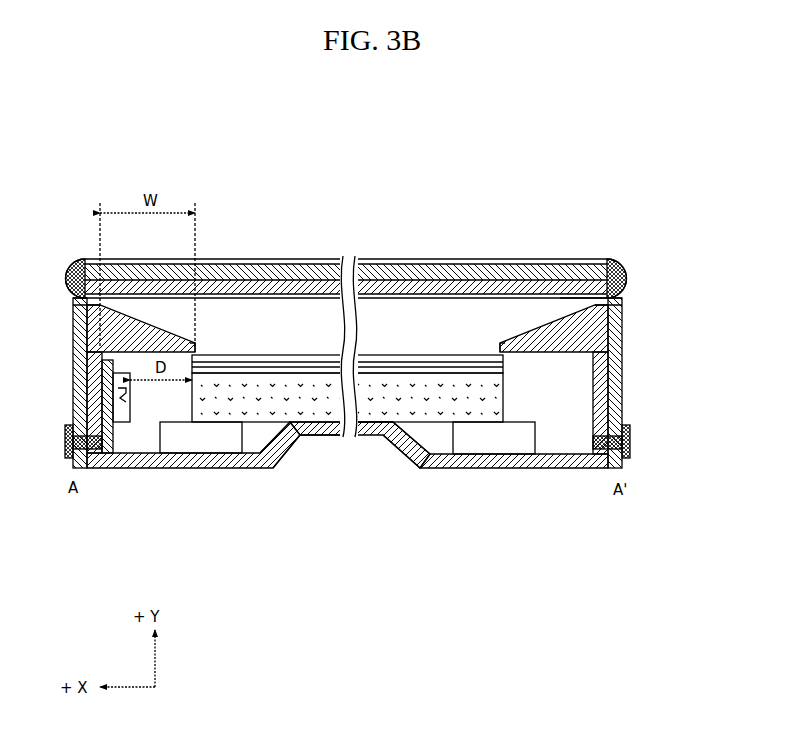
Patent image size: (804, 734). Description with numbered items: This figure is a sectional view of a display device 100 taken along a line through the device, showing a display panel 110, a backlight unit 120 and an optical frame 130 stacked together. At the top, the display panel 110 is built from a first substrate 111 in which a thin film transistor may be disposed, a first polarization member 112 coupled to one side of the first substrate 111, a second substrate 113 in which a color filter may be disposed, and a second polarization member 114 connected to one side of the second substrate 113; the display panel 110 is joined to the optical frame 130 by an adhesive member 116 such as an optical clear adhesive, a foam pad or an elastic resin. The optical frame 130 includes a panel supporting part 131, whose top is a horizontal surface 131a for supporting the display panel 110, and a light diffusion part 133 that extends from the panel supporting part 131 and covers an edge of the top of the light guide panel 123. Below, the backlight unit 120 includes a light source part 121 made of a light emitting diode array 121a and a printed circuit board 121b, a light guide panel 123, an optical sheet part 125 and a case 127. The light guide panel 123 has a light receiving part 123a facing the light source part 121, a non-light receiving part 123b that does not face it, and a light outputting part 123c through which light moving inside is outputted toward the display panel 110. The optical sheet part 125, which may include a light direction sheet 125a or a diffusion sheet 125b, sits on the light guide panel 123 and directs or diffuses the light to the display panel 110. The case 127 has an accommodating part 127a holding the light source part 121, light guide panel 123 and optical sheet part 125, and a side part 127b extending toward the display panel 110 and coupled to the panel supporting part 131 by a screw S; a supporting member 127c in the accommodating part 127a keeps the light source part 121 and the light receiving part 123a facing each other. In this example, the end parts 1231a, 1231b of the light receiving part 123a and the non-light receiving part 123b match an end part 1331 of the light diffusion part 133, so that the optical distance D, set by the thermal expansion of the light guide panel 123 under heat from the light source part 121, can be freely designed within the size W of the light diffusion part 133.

The display device 100 is at (98, 158).
The display panel 110 is at (346, 241).
The first substrate 111 is at (382, 262).
The first polarization member 112 is at (447, 290).
The second substrate 113 is at (417, 277).
The second polarization member 114 is at (483, 297).
The adhesive member 116 is at (594, 299).
The backlight unit 120 is at (346, 473).
The light source part 121 is at (125, 453).
The light emitting diode array 121a is at (130, 423).
The printed circuit board 121b is at (110, 455).
The light guide panel 123 is at (297, 476).
The light receiving part 123a is at (185, 453).
The non-light receiving part 123b is at (503, 398).
The light outputting part 123c is at (276, 437).
The optical sheet part 125 is at (375, 456).
The light direction sheet 125a is at (410, 358).
The diffusion sheet 125b is at (432, 365).
The case 127 is at (514, 453).
The accommodating part 127a is at (533, 457).
The side part 127b is at (588, 460).
The supporting member 127c is at (502, 440).
The optical frame 130 is at (400, 345).
The panel supporting part 131 is at (622, 380).
The horizontal surface 131a is at (620, 308).
The light diffusion part 133 is at (622, 347).
The end part of the light diffusion part 1331 is at (195, 345).
The end part of the light receiving part 1231a is at (193, 390).
The end part of the non-light receiving part 1231b is at (504, 388).
The screw S is at (65, 437).